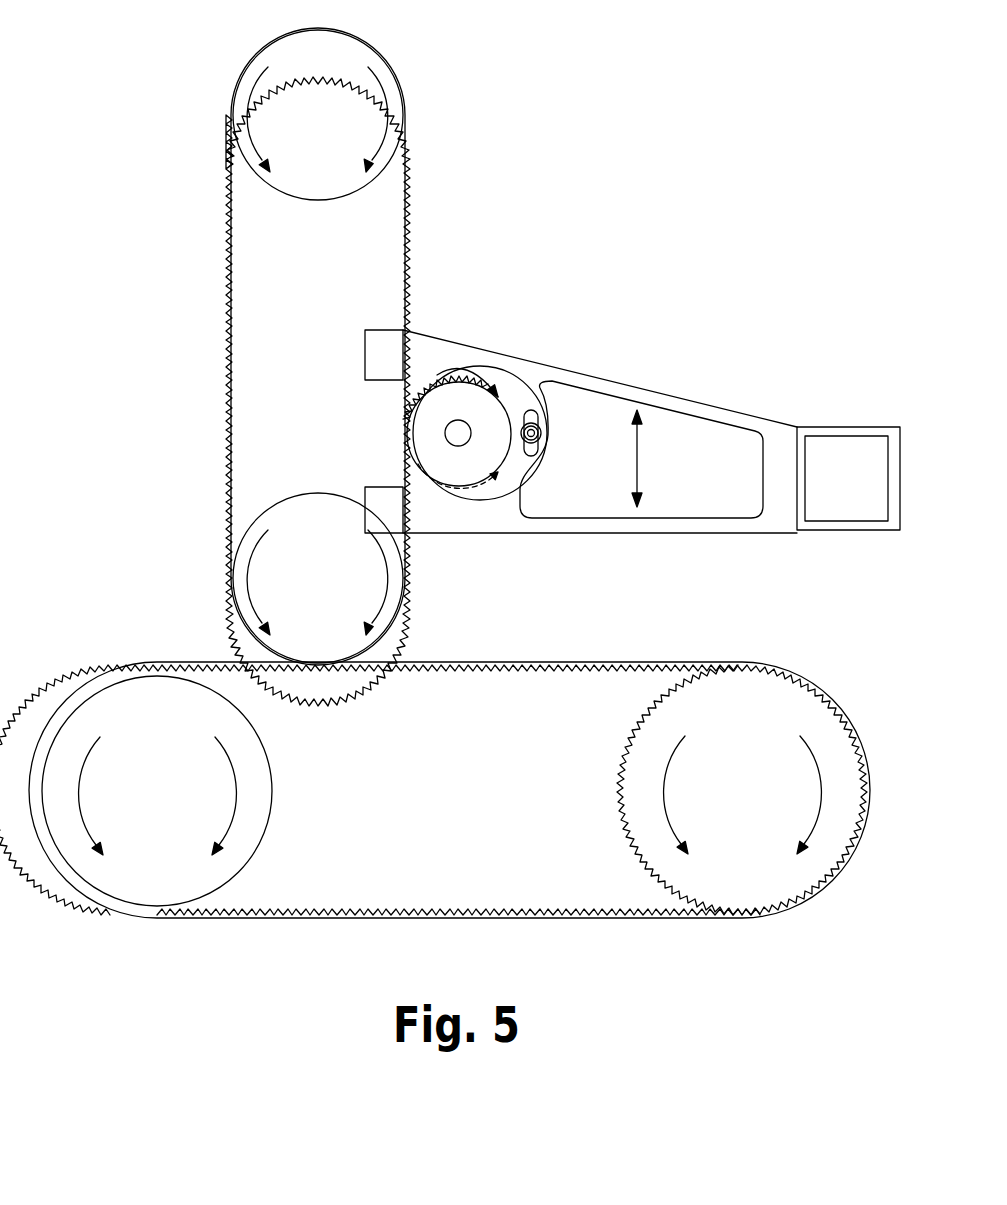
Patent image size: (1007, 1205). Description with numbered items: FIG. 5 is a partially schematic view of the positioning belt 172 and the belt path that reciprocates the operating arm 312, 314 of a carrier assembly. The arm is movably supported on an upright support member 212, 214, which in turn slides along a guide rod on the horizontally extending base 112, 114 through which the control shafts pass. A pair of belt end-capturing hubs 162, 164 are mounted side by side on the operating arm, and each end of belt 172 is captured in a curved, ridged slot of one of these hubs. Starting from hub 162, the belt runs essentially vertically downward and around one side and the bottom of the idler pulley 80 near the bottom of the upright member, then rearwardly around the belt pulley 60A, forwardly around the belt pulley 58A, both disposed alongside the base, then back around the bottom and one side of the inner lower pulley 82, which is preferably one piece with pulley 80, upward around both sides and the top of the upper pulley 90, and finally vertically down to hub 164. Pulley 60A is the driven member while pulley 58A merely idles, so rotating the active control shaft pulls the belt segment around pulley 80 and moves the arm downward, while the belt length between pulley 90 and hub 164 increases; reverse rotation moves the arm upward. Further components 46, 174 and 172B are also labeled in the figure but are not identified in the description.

The frame member 46 is at (861, 427).
The belt pulley 58A is at (767, 786).
The belt pulley 60A is at (184, 778).
The idler pulley 80 is at (337, 581).
The inner lower pulley 82 is at (318, 578).
The upper pulley 90 is at (330, 121).
The base 112 is at (531, 809).
The base 114 is at (380, 790).
The belt end-capturing hub 162 is at (539, 398).
The belt end-capturing hub 164 is at (515, 398).
The positioning belt 172 is at (441, 372).
The pulley rotation 172B is at (462, 492).
The pivot fastener 174 is at (543, 441).
The upright support member 212 is at (363, 271).
The upright support member 214 is at (318, 391).
The operating arm 312 is at (541, 327).
The operating arm 314 is at (445, 397).